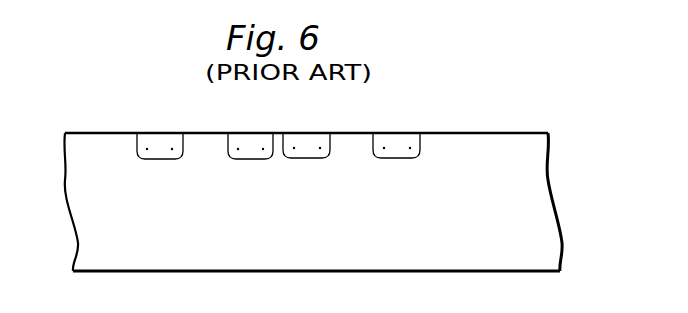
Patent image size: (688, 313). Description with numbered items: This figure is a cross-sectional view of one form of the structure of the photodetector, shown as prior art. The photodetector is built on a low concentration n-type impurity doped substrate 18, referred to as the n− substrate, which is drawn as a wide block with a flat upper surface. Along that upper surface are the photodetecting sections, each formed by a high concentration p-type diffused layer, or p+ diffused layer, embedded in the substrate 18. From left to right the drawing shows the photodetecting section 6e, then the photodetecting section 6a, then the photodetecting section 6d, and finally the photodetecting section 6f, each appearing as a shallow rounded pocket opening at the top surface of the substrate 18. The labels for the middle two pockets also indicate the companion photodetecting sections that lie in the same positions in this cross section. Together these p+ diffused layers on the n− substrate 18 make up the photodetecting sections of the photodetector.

The n-type impurity doped substrate 18 is at (485, 158).
The photodetecting section 6e is at (153, 147).
The photodetecting section 6a is at (250, 148).
The photodetecting section 6d is at (305, 148).
The photodetecting section 6f is at (395, 147).